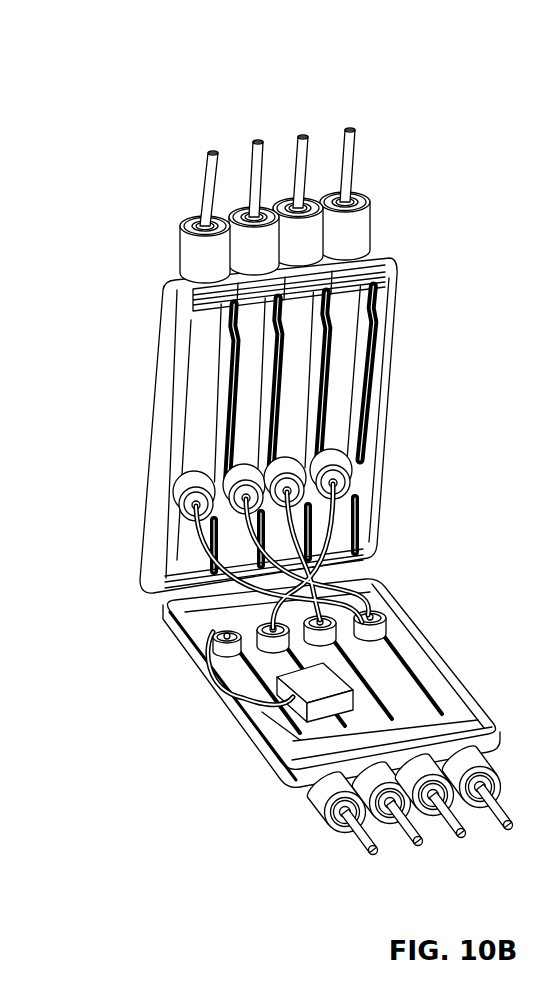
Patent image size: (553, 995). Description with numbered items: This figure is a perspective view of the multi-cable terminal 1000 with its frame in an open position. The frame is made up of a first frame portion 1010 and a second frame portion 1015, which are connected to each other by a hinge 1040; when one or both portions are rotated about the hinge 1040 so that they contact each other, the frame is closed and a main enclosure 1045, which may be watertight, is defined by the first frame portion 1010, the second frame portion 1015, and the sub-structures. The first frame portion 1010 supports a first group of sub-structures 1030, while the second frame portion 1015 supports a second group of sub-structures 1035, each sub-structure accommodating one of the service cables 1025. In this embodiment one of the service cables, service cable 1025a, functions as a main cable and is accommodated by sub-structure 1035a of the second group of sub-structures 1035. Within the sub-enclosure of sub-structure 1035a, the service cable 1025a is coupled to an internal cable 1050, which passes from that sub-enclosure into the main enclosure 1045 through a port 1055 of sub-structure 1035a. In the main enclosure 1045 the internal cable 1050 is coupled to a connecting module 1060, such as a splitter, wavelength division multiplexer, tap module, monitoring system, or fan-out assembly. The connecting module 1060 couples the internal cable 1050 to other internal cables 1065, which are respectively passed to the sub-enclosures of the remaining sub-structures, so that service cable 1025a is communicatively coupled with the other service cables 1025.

The multi-cable terminal 1000 is at (137, 152).
The first frame portion 1010 is at (158, 428).
The second frame portion 1015 is at (250, 742).
The service cables 1025 is at (350, 128).
The service cable 1025a is at (356, 843).
The first group of sub-structures 1030 is at (198, 392).
The second group of sub-structures 1035 is at (445, 706).
The sub-structure 1035a is at (212, 632).
The hinge 1040 is at (160, 594).
The main enclosure 1045 is at (414, 634).
The internal cable 1050 is at (300, 656).
The port 1055 is at (250, 647).
The connecting module 1060 is at (285, 698).
The other internal cables 1065 is at (392, 654).